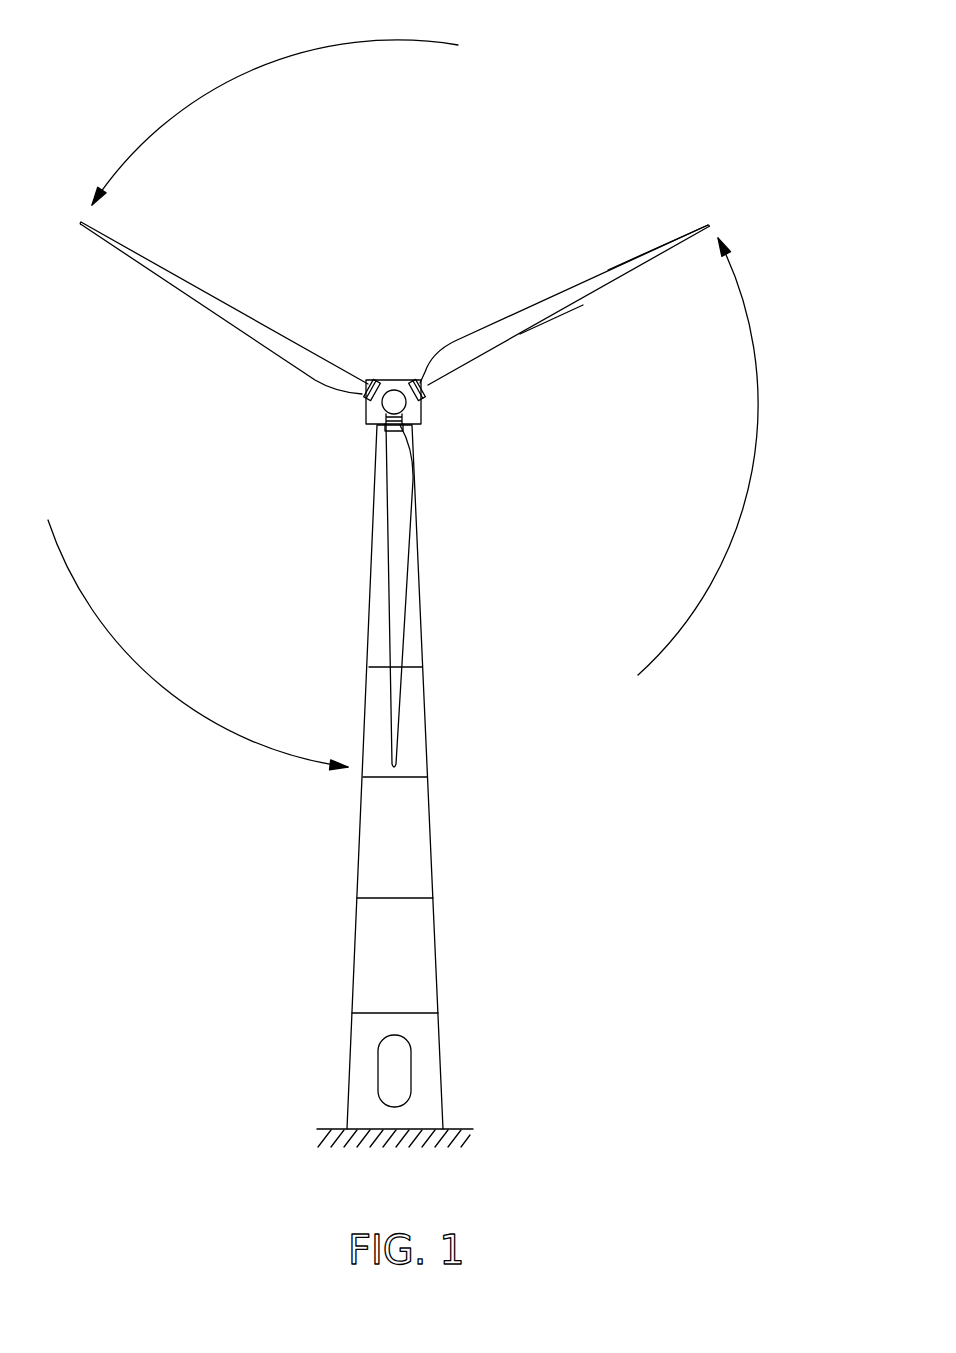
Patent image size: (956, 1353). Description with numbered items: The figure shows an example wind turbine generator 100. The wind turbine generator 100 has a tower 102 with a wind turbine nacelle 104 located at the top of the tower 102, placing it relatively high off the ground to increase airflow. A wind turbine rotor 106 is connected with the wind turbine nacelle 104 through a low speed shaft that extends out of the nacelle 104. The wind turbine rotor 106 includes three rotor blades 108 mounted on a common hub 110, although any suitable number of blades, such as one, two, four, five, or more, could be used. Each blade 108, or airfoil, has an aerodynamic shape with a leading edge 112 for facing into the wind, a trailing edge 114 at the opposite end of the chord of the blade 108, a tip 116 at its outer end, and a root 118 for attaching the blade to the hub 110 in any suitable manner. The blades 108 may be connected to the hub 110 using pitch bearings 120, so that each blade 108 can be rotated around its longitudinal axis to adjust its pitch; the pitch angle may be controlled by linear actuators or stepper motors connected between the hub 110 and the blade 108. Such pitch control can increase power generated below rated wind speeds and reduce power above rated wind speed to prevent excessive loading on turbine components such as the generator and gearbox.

The wind turbine generator 100 is at (437, 593).
The tower 102 is at (412, 848).
The wind turbine nacelle 104 is at (422, 425).
The wind turbine rotor 106 is at (437, 405).
The rotor blade 108 is at (225, 322).
The hub 110 is at (397, 404).
The leading edge 112 is at (583, 305).
The trailing edge 114 is at (608, 270).
The tip 116 is at (715, 217).
The root 118 is at (435, 402).
The pitch bearing 120 is at (372, 383).